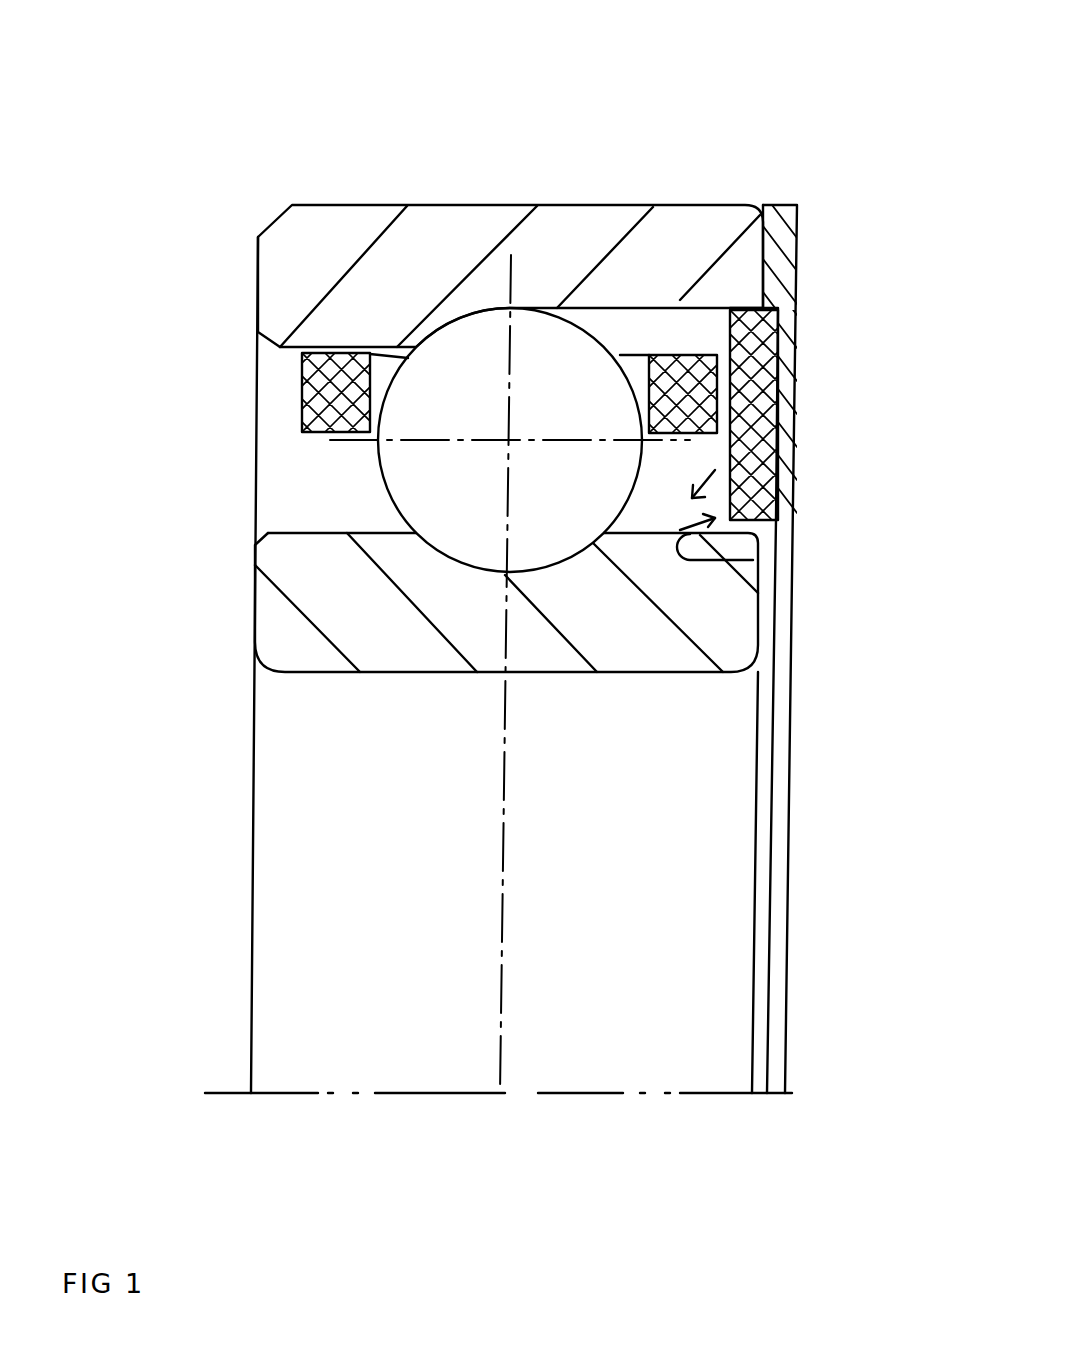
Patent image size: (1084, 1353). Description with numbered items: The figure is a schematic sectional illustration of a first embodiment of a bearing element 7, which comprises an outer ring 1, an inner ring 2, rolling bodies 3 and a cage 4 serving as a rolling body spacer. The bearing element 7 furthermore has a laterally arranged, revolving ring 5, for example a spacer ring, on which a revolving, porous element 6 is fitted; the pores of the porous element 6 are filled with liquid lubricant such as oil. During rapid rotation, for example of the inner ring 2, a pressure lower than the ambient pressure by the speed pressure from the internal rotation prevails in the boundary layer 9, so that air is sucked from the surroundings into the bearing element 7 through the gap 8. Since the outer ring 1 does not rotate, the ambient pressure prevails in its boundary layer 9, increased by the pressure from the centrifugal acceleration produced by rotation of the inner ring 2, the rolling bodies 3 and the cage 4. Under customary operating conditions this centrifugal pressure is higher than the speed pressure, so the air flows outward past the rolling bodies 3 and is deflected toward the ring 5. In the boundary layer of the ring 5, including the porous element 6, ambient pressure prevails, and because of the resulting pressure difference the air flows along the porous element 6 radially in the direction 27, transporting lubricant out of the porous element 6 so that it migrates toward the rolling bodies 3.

The outer ring 1 is at (683, 215).
The inner ring 2 is at (733, 618).
The rolling bodies 3 is at (545, 358).
The cage 4 is at (710, 390).
The revolving ring 5 is at (800, 300).
The porous element 6 is at (745, 455).
The bearing element 7 is at (532, 128).
The gap 8 is at (790, 556).
The boundary layer 9 is at (676, 322).
The direction 27 is at (800, 490).